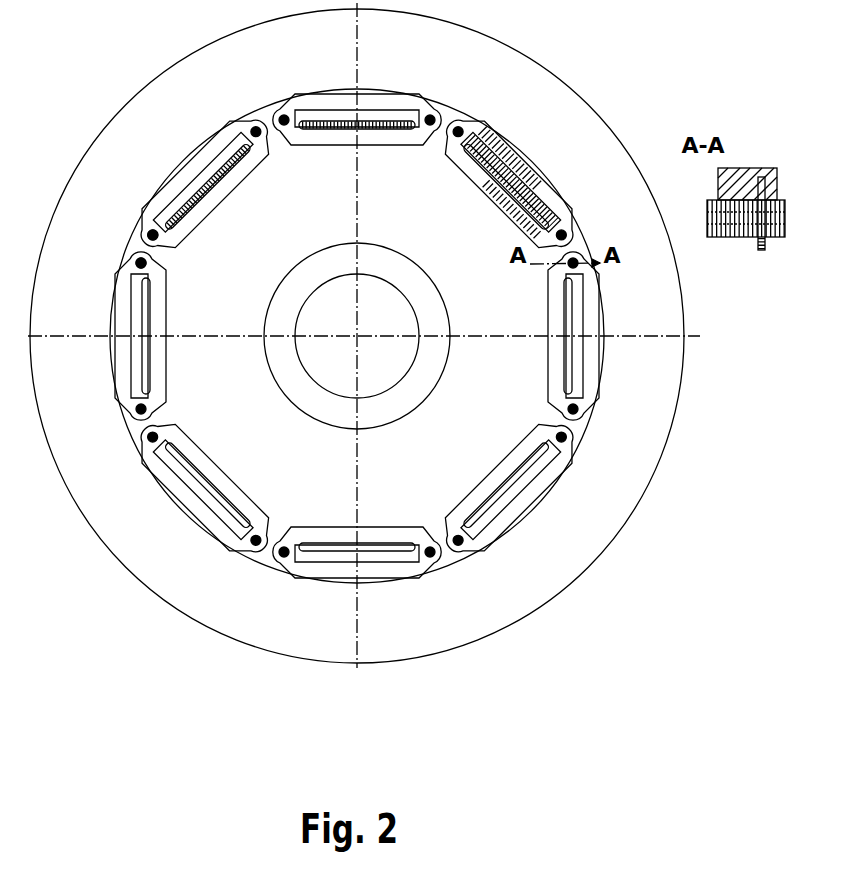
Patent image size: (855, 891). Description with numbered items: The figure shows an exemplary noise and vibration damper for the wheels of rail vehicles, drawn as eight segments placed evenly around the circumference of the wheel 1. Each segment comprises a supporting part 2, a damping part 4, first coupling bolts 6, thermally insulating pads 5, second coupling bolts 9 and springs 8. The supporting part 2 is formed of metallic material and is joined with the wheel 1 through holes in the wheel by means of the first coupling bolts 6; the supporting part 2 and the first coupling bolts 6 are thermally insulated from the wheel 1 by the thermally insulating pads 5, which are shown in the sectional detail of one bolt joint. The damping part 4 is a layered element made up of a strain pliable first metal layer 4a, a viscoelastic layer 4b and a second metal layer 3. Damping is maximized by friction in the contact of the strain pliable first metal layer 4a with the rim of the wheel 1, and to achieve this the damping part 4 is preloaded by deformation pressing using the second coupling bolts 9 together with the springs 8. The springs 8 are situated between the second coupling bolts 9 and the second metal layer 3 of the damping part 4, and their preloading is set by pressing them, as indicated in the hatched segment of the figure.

The wheel 1 is at (500, 80).
The supporting part 2 is at (219, 197).
The second metal layer 3 is at (534, 182).
The damping part 4 is at (218, 128).
The strain pliable first metal layer 4a is at (325, 88).
The viscoelastic layer 4b is at (371, 88).
The thermally insulating pads 5 is at (757, 246).
The first coupling bolts 6 is at (156, 255).
The springs 8 is at (542, 187).
The second coupling bolts 9 is at (522, 228).